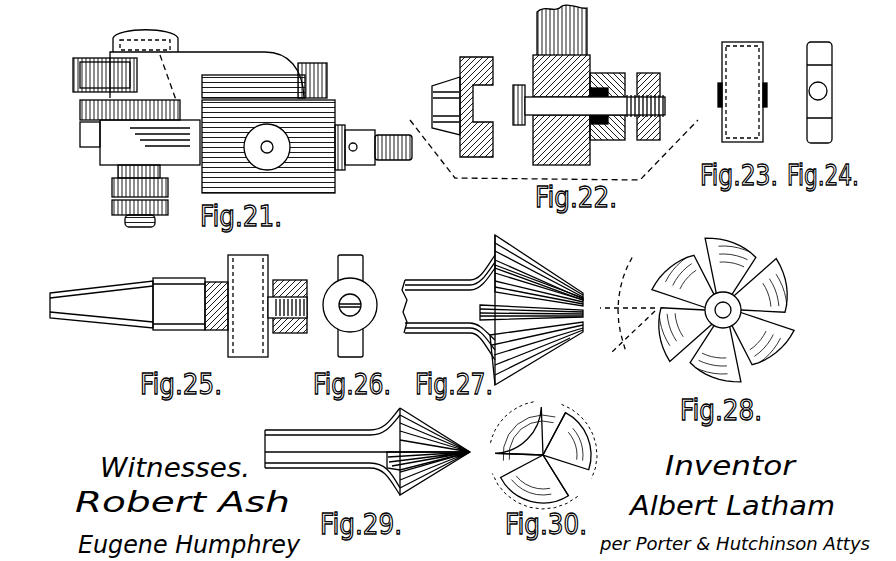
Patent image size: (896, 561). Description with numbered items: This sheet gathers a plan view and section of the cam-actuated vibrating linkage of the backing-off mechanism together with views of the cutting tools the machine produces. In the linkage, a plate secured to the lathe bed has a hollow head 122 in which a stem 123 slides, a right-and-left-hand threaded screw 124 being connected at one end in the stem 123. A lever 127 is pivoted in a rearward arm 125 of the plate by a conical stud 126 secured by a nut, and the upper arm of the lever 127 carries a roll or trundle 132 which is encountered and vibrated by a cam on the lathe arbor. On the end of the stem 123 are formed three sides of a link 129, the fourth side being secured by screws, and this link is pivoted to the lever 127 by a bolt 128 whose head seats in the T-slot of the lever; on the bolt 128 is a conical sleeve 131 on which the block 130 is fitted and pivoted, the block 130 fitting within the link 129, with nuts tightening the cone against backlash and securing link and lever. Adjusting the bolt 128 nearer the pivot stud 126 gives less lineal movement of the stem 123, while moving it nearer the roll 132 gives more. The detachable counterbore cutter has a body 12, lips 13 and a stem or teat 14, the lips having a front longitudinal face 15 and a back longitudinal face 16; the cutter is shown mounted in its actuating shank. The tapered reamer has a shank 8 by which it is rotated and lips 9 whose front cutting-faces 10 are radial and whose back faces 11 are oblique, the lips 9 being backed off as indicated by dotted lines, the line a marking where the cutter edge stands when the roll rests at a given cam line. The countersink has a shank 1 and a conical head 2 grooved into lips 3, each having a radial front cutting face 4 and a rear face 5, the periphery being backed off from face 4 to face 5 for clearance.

In FIG. 29, the shank 1 is at (332, 451).
In FIG. 29, the conical head 2 is at (441, 431).
In FIG. 30, the conical head 2 is at (512, 424).
In FIG. 29, the lips 3 is at (435, 454).
In FIG. 30, the lips 3 is at (543, 455).
In FIG. 29, the cutting or front face 4 is at (435, 445).
In FIG. 30, the cutting or front face 4 is at (531, 453).
In FIG. 29, the rear face 5 is at (428, 462).
In FIG. 30, the rear face 5 is at (545, 453).
In FIG. 27, the shank 8 is at (448, 307).
In FIG. 27, the lips 9 is at (539, 270).
In FIG. 28, the lips 9 is at (726, 301).
In FIG. 27, the front cutting-faces 10 is at (531, 307).
In FIG. 28, the front cutting-faces 10 is at (700, 250).
In FIG. 27, the back faces 11 is at (536, 352).
In FIG. 28, the back faces 11 is at (731, 279).
In FIG. 25, the body 12 is at (127, 304).
In FIG. 23, the lips 13 is at (742, 92).
In FIG. 24, the lips 13 is at (819, 93).
In FIG. 25, the lips 13 is at (248, 306).
In FIG. 26, the lips 13 is at (350, 306).
In FIG. 25, the stem, pin, or teat 14 is at (292, 278).
In FIG. 26, the stem, pin, or teat 14 is at (363, 303).
In FIG. 28, the front longitudinal face 15 is at (624, 300).
In FIG. 28, the back longitudinal face 16 is at (630, 339).
In FIG. 28, the line a is at (625, 305).
In FIG. 21, the hollow head 122 is at (268, 146).
In FIG. 21, the stem 123 is at (200, 168).
In FIG. 22, the stem 123 is at (562, 30).
In FIG. 21, the right-and-left-hand threaded screw 124 is at (392, 136).
In FIG. 21, the rearward arm 125 is at (246, 79).
In FIG. 21, the conical stud 126 is at (146, 42).
In FIG. 22, the conical stud 126 is at (448, 106).
In FIG. 21, the lever 127 is at (80, 112).
In FIG. 22, the lever 127 is at (476, 98).
In FIG. 21, the bolt 128 is at (140, 212).
In FIG. 22, the bolt 128 is at (667, 106).
In FIG. 22, the link 129 is at (534, 66).
In FIG. 22, the block 130 is at (594, 140).
In FIG. 22, the conical sleeve 131 is at (526, 124).
In FIG. 21, the roll or trundle 132 is at (80, 78).